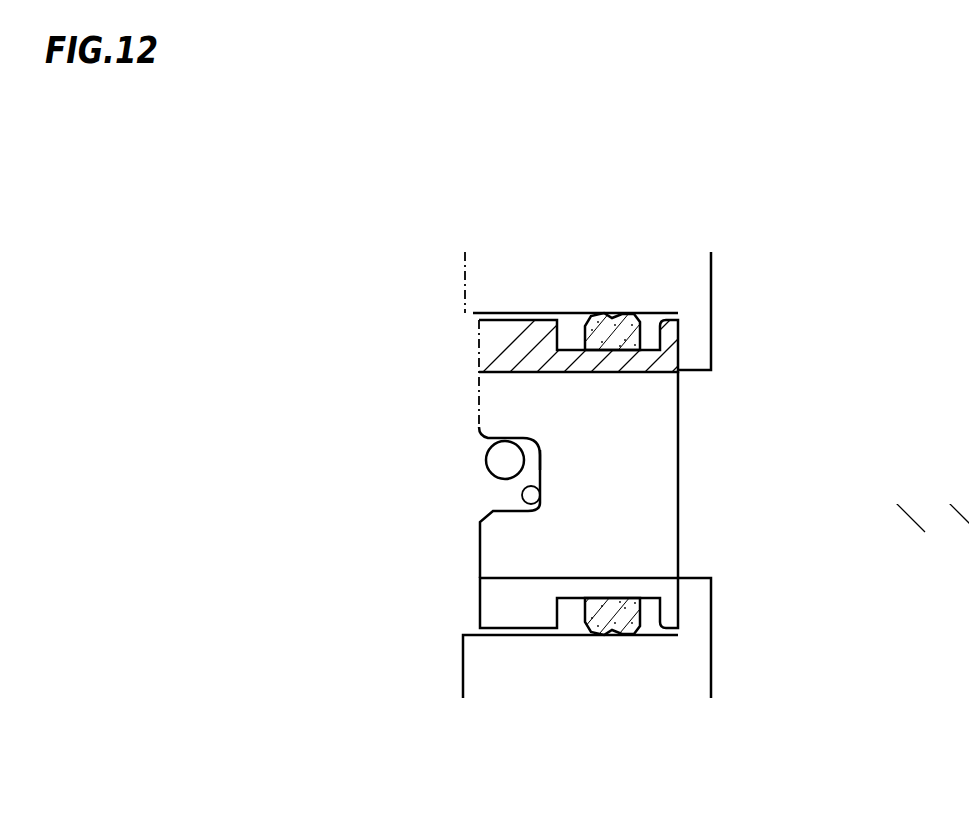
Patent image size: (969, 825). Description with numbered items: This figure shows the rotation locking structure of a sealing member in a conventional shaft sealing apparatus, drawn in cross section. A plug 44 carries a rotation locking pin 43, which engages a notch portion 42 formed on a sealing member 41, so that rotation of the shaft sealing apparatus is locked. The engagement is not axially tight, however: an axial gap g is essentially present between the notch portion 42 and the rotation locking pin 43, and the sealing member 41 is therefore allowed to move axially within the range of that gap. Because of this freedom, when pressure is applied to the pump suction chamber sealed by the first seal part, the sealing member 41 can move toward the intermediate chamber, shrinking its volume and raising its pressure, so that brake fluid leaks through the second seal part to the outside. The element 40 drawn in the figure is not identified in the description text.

The seal member 40 is at (590, 313).
The sealing member 41 is at (497, 603).
The notch portion 42 is at (530, 503).
The rotation locking pin 43 is at (497, 460).
The plug 44 is at (687, 283).
The axial gap g is at (537, 460).